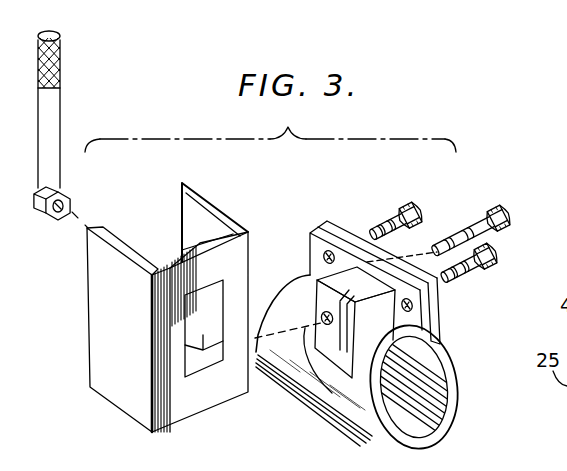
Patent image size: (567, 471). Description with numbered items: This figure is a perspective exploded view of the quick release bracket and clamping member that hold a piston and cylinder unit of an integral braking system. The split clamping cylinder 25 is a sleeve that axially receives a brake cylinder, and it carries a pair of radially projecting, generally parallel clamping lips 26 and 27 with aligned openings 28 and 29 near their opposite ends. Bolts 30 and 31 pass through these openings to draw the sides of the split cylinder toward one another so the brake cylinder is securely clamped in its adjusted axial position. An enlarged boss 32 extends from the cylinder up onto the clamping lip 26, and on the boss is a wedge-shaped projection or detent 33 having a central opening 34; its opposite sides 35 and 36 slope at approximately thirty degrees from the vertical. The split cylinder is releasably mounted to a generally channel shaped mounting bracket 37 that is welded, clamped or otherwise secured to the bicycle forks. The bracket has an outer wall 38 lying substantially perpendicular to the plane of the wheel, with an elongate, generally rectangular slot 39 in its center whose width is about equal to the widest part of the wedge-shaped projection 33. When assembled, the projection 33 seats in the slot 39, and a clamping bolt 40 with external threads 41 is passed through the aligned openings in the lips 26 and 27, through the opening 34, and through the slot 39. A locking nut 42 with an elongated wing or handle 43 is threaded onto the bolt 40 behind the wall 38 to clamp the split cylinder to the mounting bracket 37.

The split clamping cylinder 25 is at (352, 405).
The clamping lip 26 is at (313, 243).
The clamping lip 27 is at (323, 228).
The opening 28 is at (331, 250).
The opening 29 is at (400, 323).
The bolt 30 is at (401, 205).
The bolt 31 is at (494, 263).
The enlarged boss 32 is at (380, 334).
The wedge-shaped projection 33 is at (318, 378).
The opening 34 is at (322, 317).
The side of wedge-shaped projection 35 is at (362, 352).
The side of wedge-shaped projection 36 is at (318, 330).
The mounting bracket 37 is at (128, 382).
The outer wall 38 is at (173, 407).
The slot 39 is at (205, 315).
The clamping bolt 40 is at (505, 205).
The external threads 41 is at (447, 246).
The locking nut 42 is at (70, 194).
The wing or handle 43 is at (52, 109).